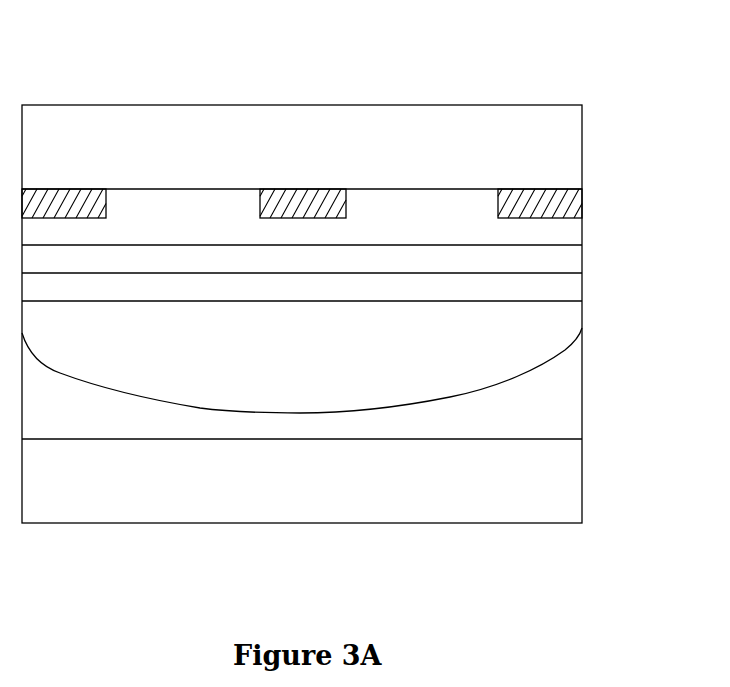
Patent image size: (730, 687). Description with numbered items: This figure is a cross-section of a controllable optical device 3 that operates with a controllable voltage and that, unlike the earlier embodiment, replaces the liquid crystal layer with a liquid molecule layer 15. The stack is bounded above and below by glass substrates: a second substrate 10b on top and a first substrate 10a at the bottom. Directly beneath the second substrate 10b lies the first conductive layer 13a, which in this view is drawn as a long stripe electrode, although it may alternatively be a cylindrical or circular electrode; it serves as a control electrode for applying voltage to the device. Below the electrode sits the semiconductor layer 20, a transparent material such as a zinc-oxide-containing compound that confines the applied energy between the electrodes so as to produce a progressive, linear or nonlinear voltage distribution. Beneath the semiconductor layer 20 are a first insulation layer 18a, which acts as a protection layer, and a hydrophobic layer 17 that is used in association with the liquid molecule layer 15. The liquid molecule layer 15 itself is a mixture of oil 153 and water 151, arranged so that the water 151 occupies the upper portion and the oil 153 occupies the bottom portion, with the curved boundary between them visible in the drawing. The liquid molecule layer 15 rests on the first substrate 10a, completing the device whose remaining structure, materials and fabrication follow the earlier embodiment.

The optical device 3 is at (362, 284).
The second substrate 10b is at (323, 160).
The semiconductor layer 20 is at (413, 232).
The first conductive layer 13a is at (545, 207).
The first insulation layer 18a is at (538, 256).
The hydrophobic layer 17 is at (543, 284).
The liquid molecule layer 15 is at (340, 375).
The oil 153 is at (169, 373).
The water 151 is at (595, 312).
The first substrate 10a is at (323, 495).